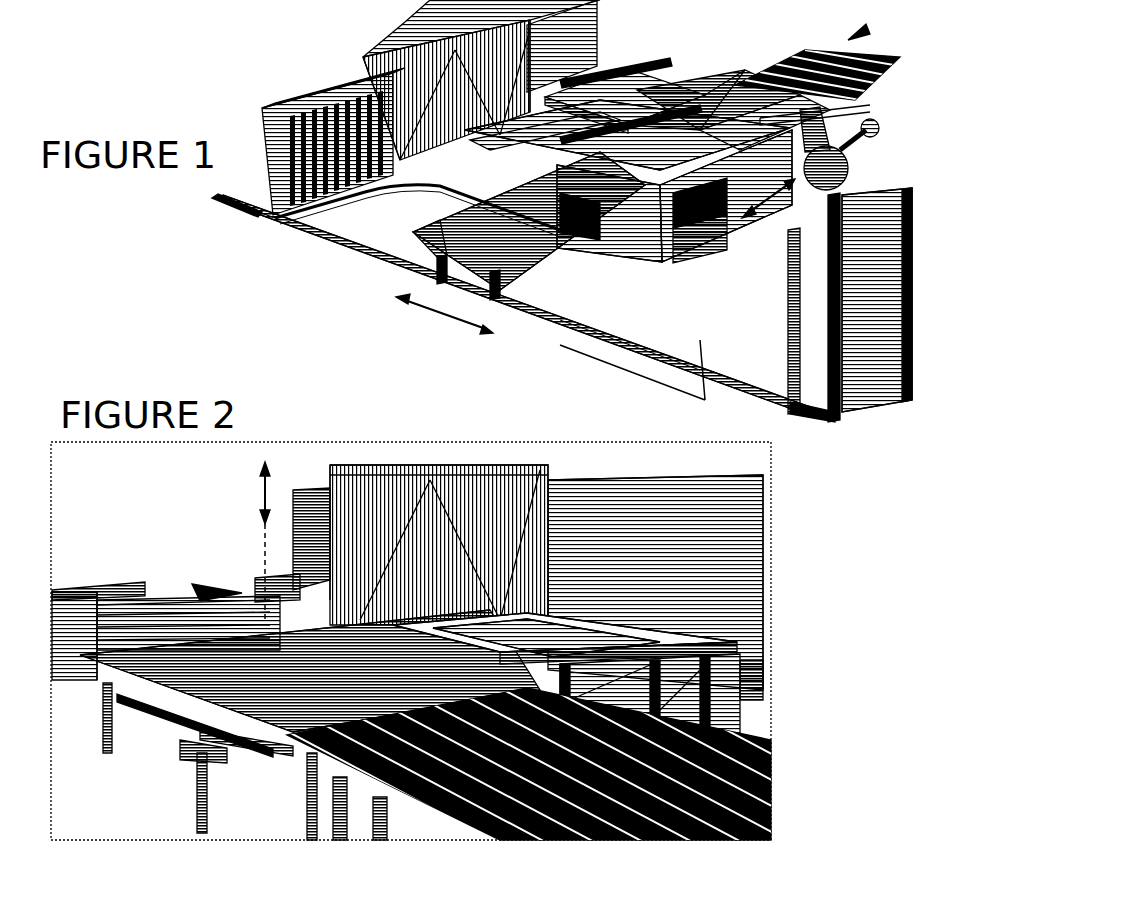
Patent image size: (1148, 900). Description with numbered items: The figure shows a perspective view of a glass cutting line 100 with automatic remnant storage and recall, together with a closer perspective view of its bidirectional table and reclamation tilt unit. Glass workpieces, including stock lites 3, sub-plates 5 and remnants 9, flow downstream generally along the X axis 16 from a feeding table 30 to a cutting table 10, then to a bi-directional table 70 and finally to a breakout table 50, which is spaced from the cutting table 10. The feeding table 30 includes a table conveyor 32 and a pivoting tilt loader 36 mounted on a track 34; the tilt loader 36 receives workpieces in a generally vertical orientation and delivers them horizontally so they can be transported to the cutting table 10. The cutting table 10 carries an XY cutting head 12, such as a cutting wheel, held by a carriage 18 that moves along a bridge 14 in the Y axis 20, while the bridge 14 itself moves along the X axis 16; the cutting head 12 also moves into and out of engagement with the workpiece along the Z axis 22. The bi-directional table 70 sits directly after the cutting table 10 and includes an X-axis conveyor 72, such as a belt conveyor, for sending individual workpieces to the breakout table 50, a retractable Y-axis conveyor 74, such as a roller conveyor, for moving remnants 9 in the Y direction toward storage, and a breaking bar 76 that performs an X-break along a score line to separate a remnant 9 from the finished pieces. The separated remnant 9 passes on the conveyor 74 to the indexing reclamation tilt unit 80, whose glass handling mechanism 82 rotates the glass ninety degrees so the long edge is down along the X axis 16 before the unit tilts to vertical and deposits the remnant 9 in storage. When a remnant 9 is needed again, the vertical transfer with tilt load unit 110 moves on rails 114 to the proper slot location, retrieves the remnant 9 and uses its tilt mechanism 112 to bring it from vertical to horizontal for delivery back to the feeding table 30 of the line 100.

In FIG. 1, the stock lite 3 is at (905, 255).
In FIG. 1, the sub-plate 5 is at (640, 152).
In FIG. 1, the remnant 9 is at (262, 135).
In FIG. 2, the remnant 9 is at (740, 672).
In FIG. 1, the cutting table 10 is at (637, 232).
In FIG. 2, the cutting table 10 is at (135, 590).
In FIG. 2, the XY cutting head 12 is at (192, 585).
In FIG. 1, the bridge 14 is at (580, 136).
In FIG. 2, the bridge 14 is at (120, 600).
In FIG. 1, the X axis 16 is at (775, 215).
In FIG. 1, the carriage 18 is at (665, 90).
In FIG. 2, the carriage 18 is at (290, 560).
In FIG. 1, the Y axis 20 is at (460, 323).
In FIG. 2, the Z axis 22 is at (262, 498).
In FIG. 1, the feeding table 30 is at (523, 272).
In FIG. 2, the feeding table 30 is at (80, 590).
In FIG. 1, the table conveyor 32 is at (413, 255).
In FIG. 1, the track 34 is at (603, 347).
In FIG. 1, the pivoting tilt loader 36 is at (805, 418).
In FIG. 1, the breakout table 50 is at (870, 62).
In FIG. 2, the breakout table 50 is at (670, 840).
In FIG. 1, the bi-directional table 70 is at (750, 78).
In FIG. 2, the bi-directional table 70 is at (190, 760).
In FIG. 2, the X-axis conveyor 72 is at (145, 730).
In FIG. 2, the retractable Y-axis conveyor 74 is at (255, 750).
In FIG. 1, the breaking bar 76 is at (720, 80).
In FIG. 2, the breaking bar 76 is at (745, 700).
In FIG. 1, the indexing reclamation tilt unit 80 is at (640, 75).
In FIG. 2, the indexing reclamation tilt unit 80 is at (725, 640).
In FIG. 1, the glass handling mechanism 82 is at (618, 70).
In FIG. 1, the cutting line 100 is at (900, 10).
In FIG. 1, the vertical transfer with tilt load unit 110 is at (345, 245).
In FIG. 2, the vertical transfer with tilt load unit 110 is at (300, 530).
In FIG. 1, the tilt mechanism 112 is at (375, 190).
In FIG. 1, the rails 114 is at (245, 212).